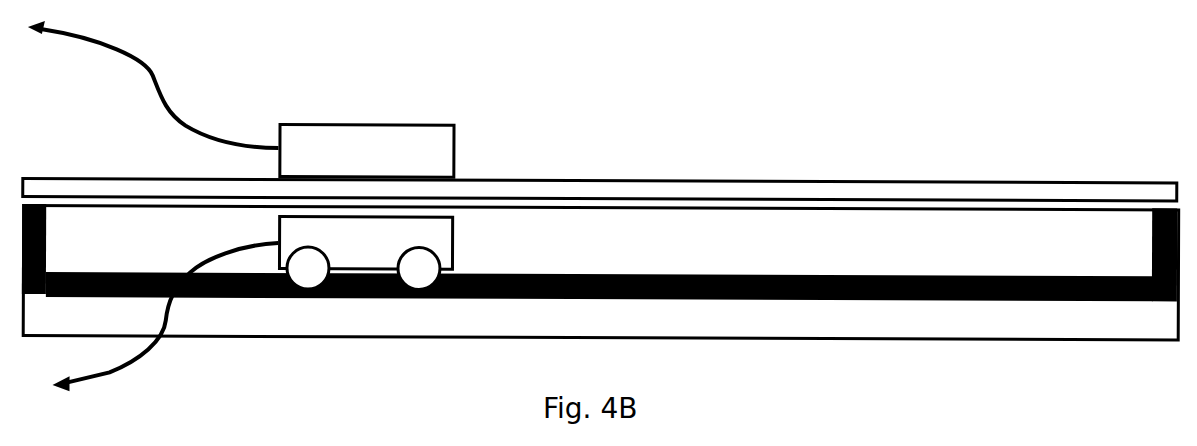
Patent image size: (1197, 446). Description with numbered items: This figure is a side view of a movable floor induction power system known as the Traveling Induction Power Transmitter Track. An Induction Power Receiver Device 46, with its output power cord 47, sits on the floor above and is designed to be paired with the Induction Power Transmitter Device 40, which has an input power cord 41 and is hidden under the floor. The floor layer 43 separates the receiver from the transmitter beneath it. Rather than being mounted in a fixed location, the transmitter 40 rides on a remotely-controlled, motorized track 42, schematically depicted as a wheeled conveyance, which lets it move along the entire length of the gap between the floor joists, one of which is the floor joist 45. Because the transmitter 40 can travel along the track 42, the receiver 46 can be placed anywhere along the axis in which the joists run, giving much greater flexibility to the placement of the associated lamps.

The Induction Power Transmitter Device 40 is at (440, 225).
The input power cord 41 is at (143, 357).
The motorized track 42 is at (815, 277).
The cover plate 43 is at (995, 193).
The floor joist 45 is at (923, 318).
The Induction Power Receiver Device 46 is at (410, 142).
The output power cord 47 is at (125, 62).